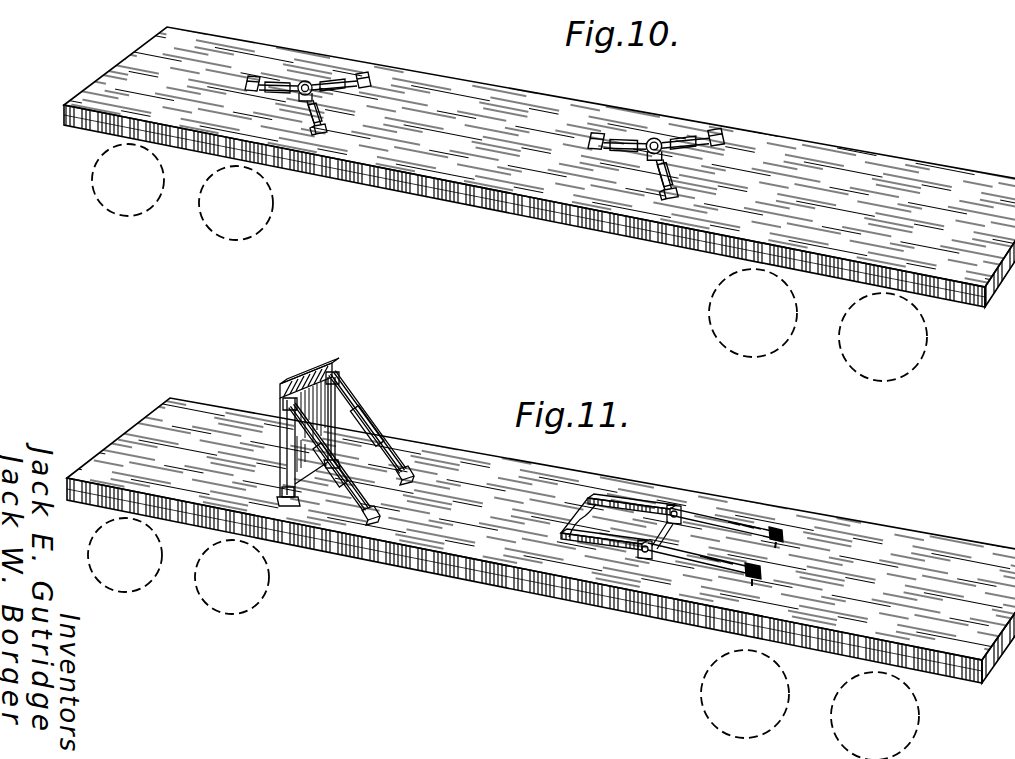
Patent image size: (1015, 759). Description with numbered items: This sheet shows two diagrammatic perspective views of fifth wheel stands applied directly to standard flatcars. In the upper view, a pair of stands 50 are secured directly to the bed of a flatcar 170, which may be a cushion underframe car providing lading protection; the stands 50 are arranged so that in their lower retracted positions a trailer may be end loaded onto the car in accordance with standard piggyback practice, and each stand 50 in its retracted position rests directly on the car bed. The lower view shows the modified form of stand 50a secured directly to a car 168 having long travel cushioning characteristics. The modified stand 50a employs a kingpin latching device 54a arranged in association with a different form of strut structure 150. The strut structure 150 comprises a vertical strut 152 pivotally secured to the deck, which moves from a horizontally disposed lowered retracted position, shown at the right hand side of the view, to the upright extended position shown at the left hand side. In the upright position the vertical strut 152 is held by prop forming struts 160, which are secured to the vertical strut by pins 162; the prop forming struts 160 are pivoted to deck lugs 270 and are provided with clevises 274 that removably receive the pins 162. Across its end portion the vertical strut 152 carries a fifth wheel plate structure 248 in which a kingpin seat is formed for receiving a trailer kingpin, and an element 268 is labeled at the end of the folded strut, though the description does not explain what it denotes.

In FIG. 10, the stand 50 is at (331, 79).
In FIG. 10, the flatcar 170 is at (915, 167).
In FIG. 11, the car 168 is at (849, 536).
In FIG. 11, the modified form of stand 50a is at (521, 483).
In FIG. 11, the kingpin latching device 54a is at (308, 368).
In FIG. 11, the strut structure 150 is at (495, 483).
In FIG. 11, the vertical strut 152 is at (279, 452).
In FIG. 11, the prop forming struts 160 is at (384, 433).
In FIG. 11, the pins 162 is at (335, 370).
In FIG. 11, the fifth wheel plate structure 248 is at (663, 544).
In FIG. 11, the hinge bracket 268 is at (577, 497).
In FIG. 11, the deck lugs 270 is at (786, 531).
In FIG. 11, the clevises 274 is at (677, 504).